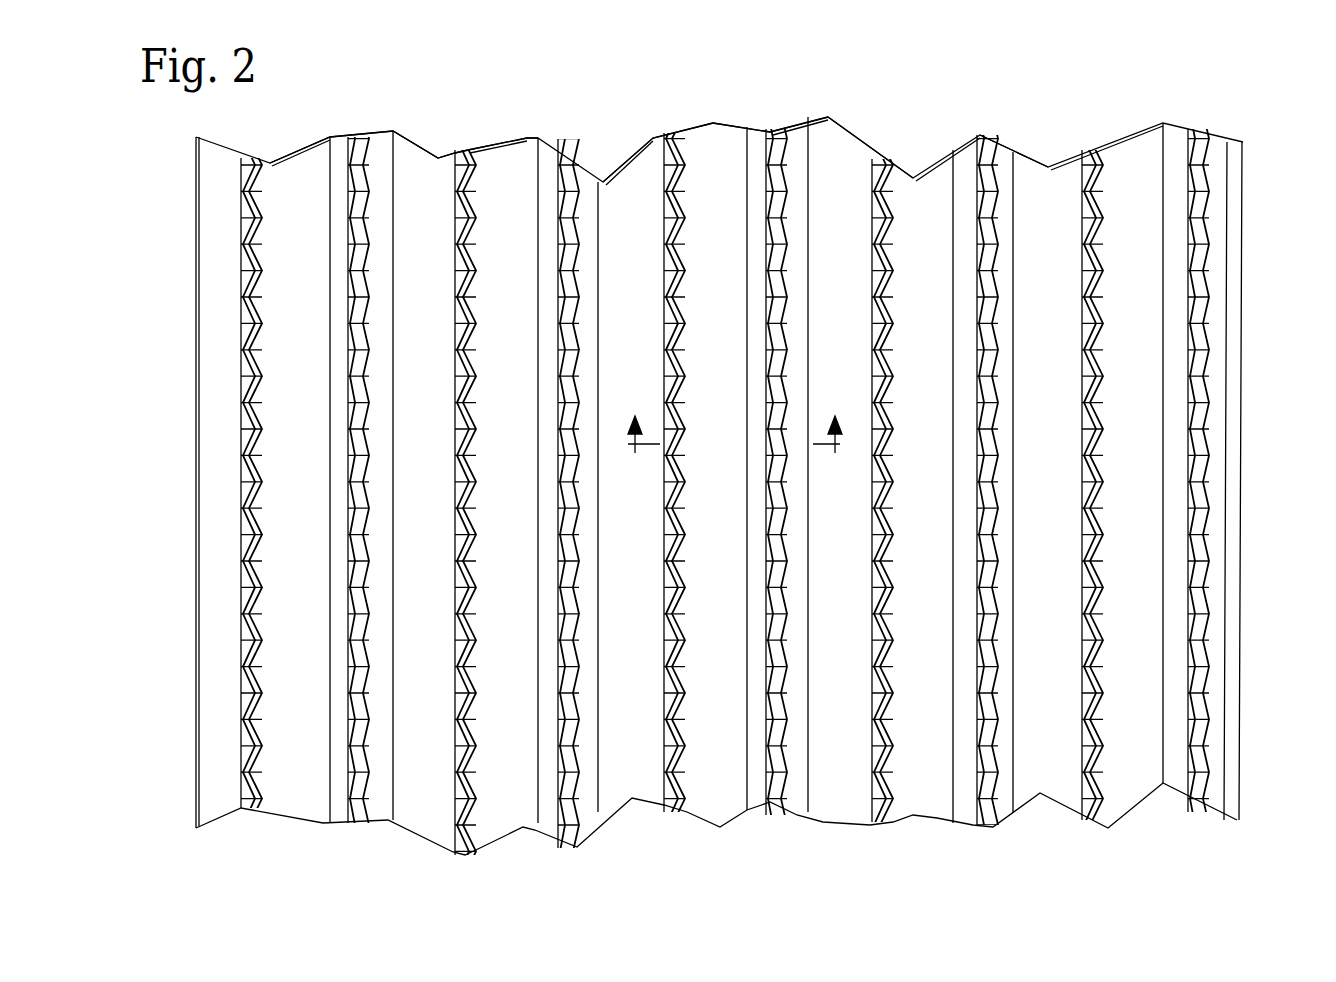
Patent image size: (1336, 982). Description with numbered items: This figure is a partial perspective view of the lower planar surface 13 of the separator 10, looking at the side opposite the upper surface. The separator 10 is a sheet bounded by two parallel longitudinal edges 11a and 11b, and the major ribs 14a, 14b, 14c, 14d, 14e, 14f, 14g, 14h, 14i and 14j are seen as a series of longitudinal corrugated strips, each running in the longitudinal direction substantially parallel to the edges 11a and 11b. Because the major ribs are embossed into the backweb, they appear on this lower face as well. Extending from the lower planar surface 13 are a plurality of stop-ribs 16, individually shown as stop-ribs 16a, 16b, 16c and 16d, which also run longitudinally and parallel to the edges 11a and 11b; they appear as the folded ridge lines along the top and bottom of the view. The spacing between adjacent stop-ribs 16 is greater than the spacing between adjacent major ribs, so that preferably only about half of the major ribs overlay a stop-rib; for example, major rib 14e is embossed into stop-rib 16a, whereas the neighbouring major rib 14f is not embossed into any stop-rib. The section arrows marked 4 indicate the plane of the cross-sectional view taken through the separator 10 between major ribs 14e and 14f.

The separator 10 is at (153, 166).
The longitudinal edge 11a is at (197, 485).
The longitudinal edge 11b is at (1243, 583).
The lower planar surface 13 is at (310, 780).
The major rib 14a is at (245, 630).
The major rib 14b is at (350, 705).
The major rib 14c is at (450, 808).
The major rib 14d is at (560, 808).
The major rib 14e is at (660, 783).
The major rib 14f is at (767, 782).
The major rib 14g is at (877, 790).
The major rib 14h is at (980, 783).
The major rib 14i is at (1080, 787).
The major rib 14j is at (1193, 730).
The stop-ribs 16 is at (392, 153).
The stop-rib 16a is at (656, 153).
The stop-rib 16b is at (747, 157).
The stop-rib 16c is at (792, 156).
The pleat fold 16d is at (814, 179).
The section line 4- 4 is at (735, 420).